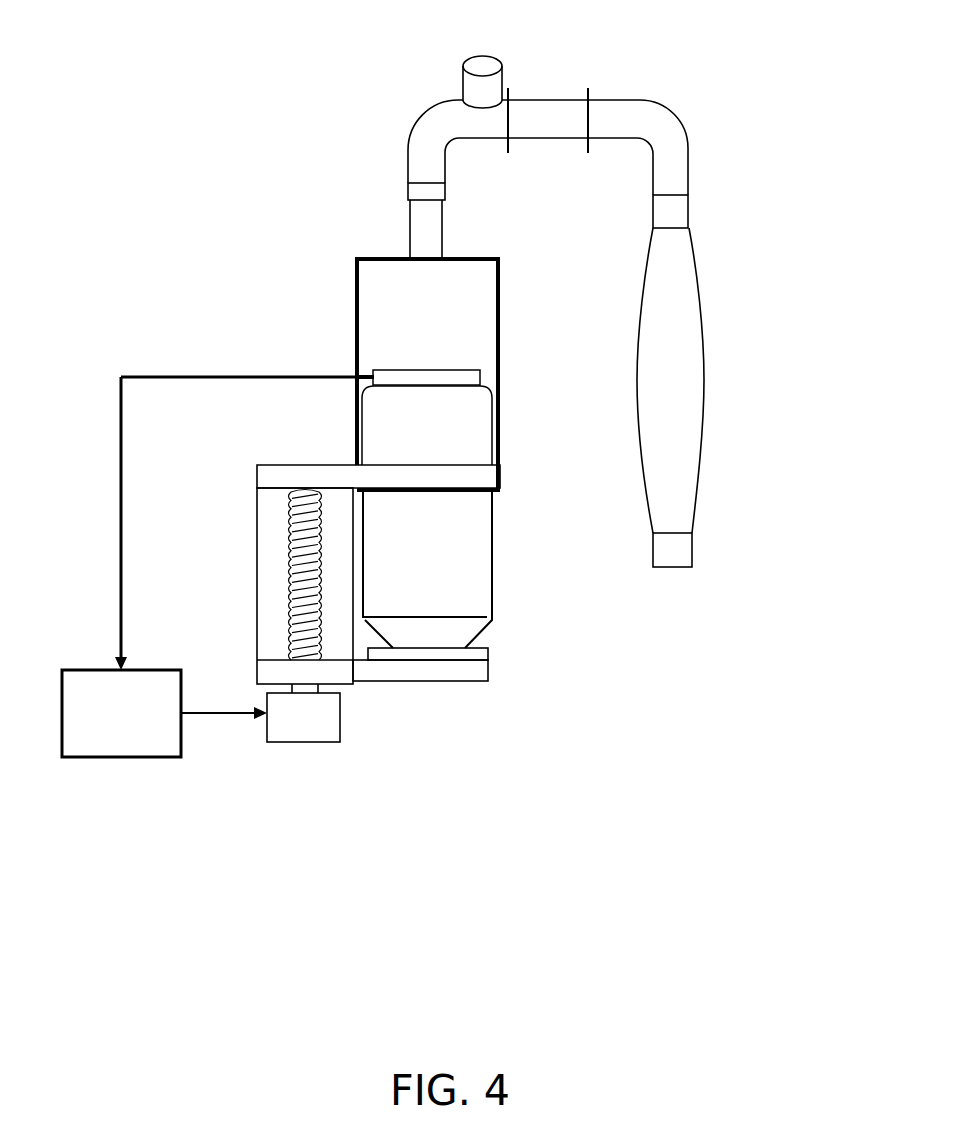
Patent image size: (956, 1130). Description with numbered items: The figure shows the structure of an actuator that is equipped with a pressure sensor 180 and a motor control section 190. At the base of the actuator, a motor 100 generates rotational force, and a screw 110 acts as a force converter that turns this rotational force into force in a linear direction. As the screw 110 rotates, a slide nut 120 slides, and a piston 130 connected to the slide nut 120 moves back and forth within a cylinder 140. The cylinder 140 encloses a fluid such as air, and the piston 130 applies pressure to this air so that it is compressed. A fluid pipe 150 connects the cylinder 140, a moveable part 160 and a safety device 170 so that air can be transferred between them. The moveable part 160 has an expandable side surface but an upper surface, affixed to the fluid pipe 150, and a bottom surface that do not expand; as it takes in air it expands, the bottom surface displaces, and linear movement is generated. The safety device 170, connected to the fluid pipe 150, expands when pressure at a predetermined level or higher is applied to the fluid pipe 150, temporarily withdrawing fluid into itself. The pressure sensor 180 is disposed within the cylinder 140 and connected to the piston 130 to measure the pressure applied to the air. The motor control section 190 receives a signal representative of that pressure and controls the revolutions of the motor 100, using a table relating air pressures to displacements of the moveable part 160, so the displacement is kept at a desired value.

The motor 100 is at (305, 743).
The screw 110 is at (287, 523).
The slide nut 120 is at (432, 678).
The piston 130 is at (492, 598).
The cylinder 140 is at (355, 290).
The fluid pipe 150 is at (608, 98).
The moveable part 160 is at (700, 358).
The safety device 170 is at (458, 75).
The pressure sensor 180 is at (355, 375).
The motor control section 190 is at (132, 758).